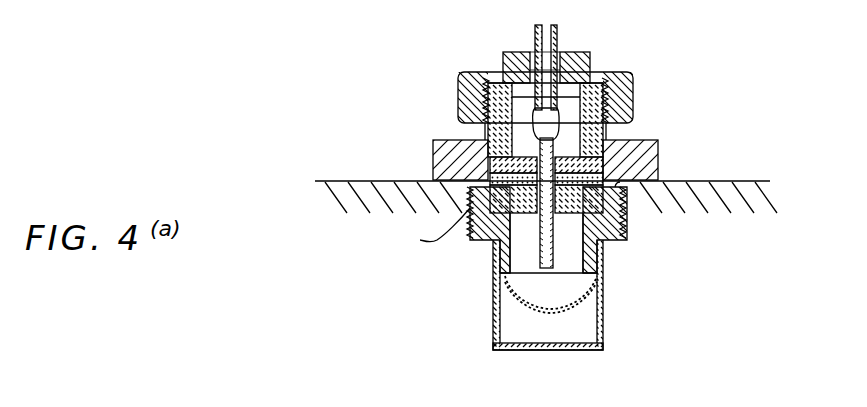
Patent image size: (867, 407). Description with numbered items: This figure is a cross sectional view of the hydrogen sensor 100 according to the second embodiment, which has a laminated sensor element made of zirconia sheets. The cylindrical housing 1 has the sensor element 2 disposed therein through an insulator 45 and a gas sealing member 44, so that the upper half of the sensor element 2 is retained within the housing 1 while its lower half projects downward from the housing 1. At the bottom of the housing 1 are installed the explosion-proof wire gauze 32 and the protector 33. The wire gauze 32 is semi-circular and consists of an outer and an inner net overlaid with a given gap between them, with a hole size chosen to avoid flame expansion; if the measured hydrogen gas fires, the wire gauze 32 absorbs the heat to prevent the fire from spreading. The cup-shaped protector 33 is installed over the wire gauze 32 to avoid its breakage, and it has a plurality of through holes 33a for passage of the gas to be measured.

The hydrogen sensor 100 is at (542, 209).
The housing 1 is at (657, 158).
The sensor element 2 is at (540, 235).
The explosion-proof wire gauze 32 is at (500, 300).
The protector 33 is at (534, 317).
The through holes 33a is at (570, 348).
The gas sealing member 44 is at (622, 188).
The insulator 45 is at (615, 240).